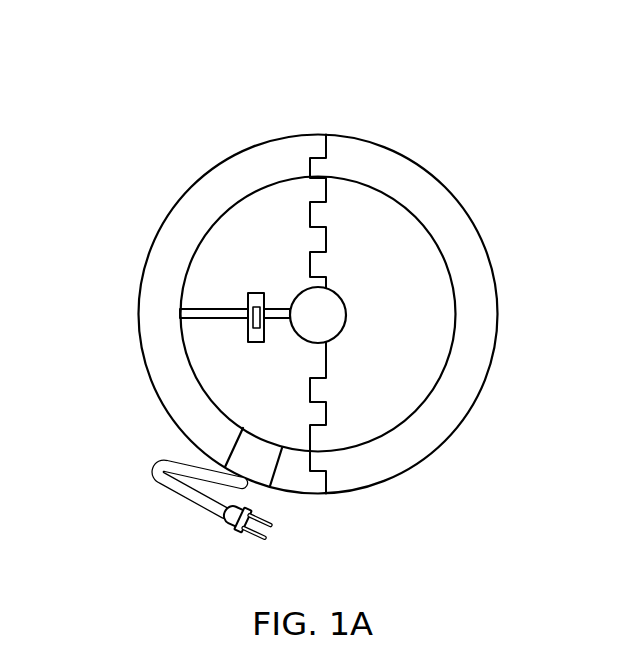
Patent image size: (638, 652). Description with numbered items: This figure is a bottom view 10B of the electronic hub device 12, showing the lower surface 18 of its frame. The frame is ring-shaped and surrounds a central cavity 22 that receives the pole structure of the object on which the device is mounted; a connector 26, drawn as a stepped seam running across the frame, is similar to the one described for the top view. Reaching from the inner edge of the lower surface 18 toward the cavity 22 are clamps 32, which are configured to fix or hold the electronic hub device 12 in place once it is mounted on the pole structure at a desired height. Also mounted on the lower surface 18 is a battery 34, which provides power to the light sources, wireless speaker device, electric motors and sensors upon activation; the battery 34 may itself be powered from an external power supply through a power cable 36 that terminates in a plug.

The bottom view 10B is at (123, 115).
The electronic hub device 12 is at (317, 135).
The lower surface 18 is at (400, 268).
The cavity 22 is at (307, 312).
The connector 26 is at (327, 378).
The clamps 32 is at (248, 300).
The battery 34 is at (267, 463).
The power cable 36 is at (170, 490).